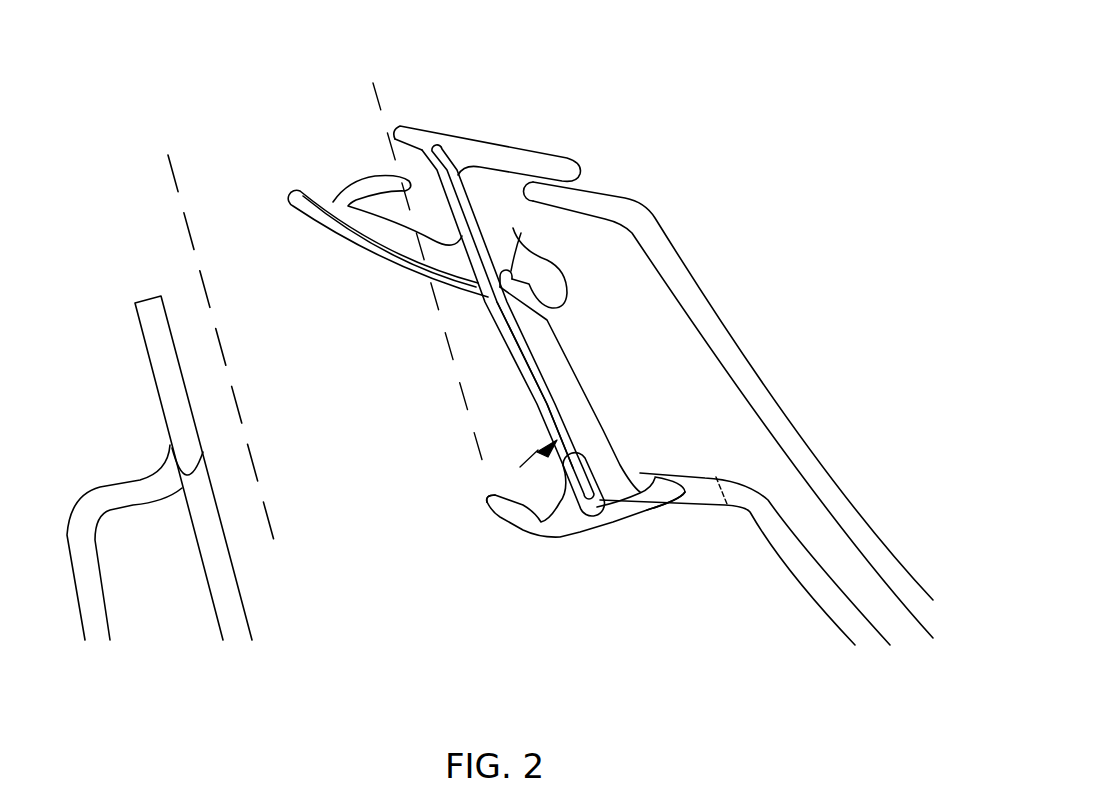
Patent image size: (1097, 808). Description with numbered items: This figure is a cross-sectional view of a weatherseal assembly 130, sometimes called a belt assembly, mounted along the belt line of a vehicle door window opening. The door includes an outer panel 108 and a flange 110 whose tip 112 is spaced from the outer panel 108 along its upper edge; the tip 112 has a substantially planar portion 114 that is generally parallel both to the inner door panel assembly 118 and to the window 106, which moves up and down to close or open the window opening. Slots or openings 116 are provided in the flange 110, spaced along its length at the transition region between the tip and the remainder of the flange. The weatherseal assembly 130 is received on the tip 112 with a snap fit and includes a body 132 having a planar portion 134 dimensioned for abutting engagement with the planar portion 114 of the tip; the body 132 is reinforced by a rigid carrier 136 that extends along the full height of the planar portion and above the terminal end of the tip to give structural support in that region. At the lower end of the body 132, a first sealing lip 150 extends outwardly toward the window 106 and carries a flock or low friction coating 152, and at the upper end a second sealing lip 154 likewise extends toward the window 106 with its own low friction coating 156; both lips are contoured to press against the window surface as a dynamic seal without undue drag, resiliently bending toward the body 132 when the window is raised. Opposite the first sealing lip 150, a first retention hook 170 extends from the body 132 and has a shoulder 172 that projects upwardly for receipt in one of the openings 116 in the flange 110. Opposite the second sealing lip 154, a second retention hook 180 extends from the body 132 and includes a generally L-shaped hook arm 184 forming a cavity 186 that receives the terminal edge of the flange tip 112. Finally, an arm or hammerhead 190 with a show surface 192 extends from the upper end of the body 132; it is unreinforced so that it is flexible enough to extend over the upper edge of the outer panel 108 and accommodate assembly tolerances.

The window 106 is at (178, 192).
The outer panel 108 is at (712, 322).
The flange 110 is at (798, 557).
The tip 112 is at (563, 378).
The planar portion 114 is at (602, 432).
The openings 116 is at (714, 505).
The inner door panel assembly 118 is at (240, 618).
The weatherseal assembly 130 is at (501, 98).
The body 132 is at (545, 491).
The planar portion 134 is at (540, 362).
The rigid carrier 136 is at (515, 352).
The first sealing lip 150 is at (560, 538).
The low friction coating 152 is at (500, 533).
The second sealing lip 154 is at (333, 198).
The low friction coating 156 is at (352, 244).
The first retention hook 170 is at (632, 512).
The shoulder 172 is at (648, 472).
The second retention hook 180 is at (500, 250).
The hook arm 184 is at (560, 296).
The cavity 186 is at (525, 240).
The arm 190 is at (525, 148).
The show surface 192 is at (437, 122).